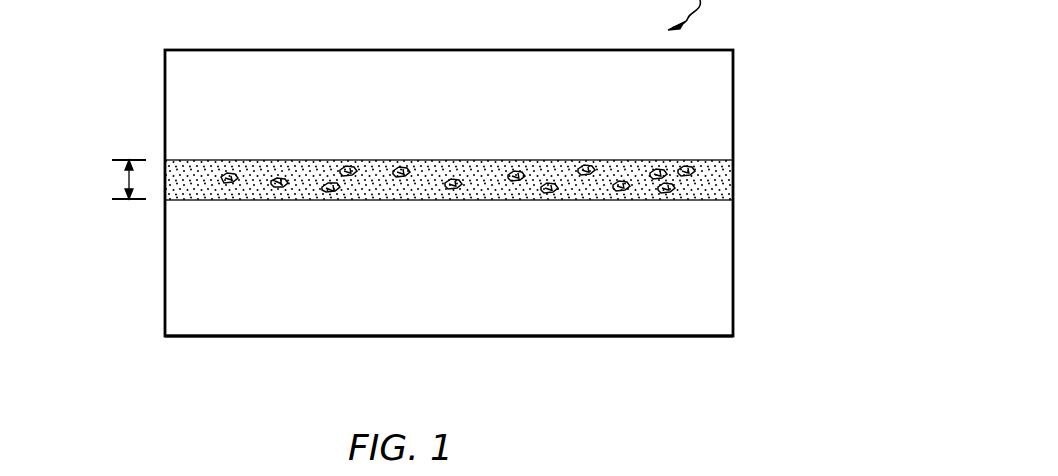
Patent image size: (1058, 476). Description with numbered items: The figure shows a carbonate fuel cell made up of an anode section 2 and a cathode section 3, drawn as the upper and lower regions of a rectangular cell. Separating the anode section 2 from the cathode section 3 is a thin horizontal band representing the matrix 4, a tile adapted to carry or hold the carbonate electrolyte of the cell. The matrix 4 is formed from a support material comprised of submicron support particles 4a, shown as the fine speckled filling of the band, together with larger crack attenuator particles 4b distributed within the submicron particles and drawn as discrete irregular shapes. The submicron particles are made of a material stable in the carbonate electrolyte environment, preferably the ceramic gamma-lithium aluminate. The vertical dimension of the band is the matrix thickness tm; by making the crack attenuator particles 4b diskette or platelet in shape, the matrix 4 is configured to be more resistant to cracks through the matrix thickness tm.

The anode section 2 is at (330, 68).
The cathode section 3 is at (338, 325).
The matrix 4 is at (725, 175).
The submicron support particles 4a is at (424, 178).
The crack attenuator particles 4b is at (457, 186).
The matrix thickness tm is at (125, 180).